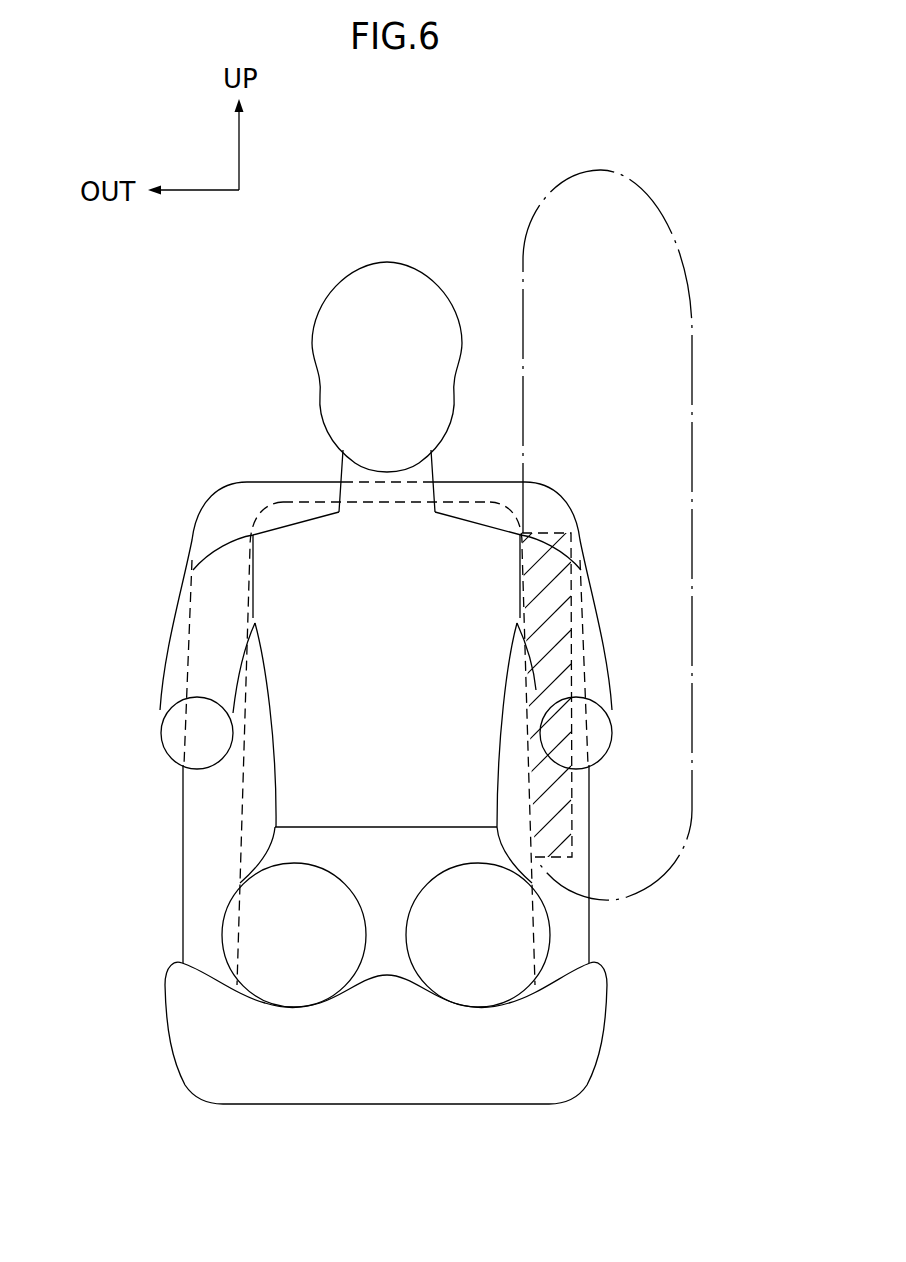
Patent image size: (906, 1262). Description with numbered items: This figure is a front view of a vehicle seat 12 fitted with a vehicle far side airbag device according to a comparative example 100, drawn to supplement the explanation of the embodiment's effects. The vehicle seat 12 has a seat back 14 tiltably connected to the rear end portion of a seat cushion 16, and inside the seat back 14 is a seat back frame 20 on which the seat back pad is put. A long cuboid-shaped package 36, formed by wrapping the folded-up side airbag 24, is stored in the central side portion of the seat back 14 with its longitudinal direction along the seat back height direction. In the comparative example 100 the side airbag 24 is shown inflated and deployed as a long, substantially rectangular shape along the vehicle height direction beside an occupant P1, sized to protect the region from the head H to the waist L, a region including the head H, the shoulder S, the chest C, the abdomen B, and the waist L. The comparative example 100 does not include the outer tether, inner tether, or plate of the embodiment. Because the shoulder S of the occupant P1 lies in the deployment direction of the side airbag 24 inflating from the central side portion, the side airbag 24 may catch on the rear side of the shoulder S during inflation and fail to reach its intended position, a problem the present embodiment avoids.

The comparative example 100 is at (656, 476).
The side airbag 24 is at (681, 254).
The vehicle seat 12 is at (403, 793).
The seat back 14 is at (421, 733).
The seat cushion 16 is at (165, 1018).
The seat back frame 20 is at (237, 855).
The package 36 is at (577, 825).
The head H is at (417, 267).
The shoulder S is at (587, 580).
The chest C is at (490, 660).
The abdomen B is at (468, 786).
The waist L is at (490, 850).
The occupant P1 is at (262, 795).